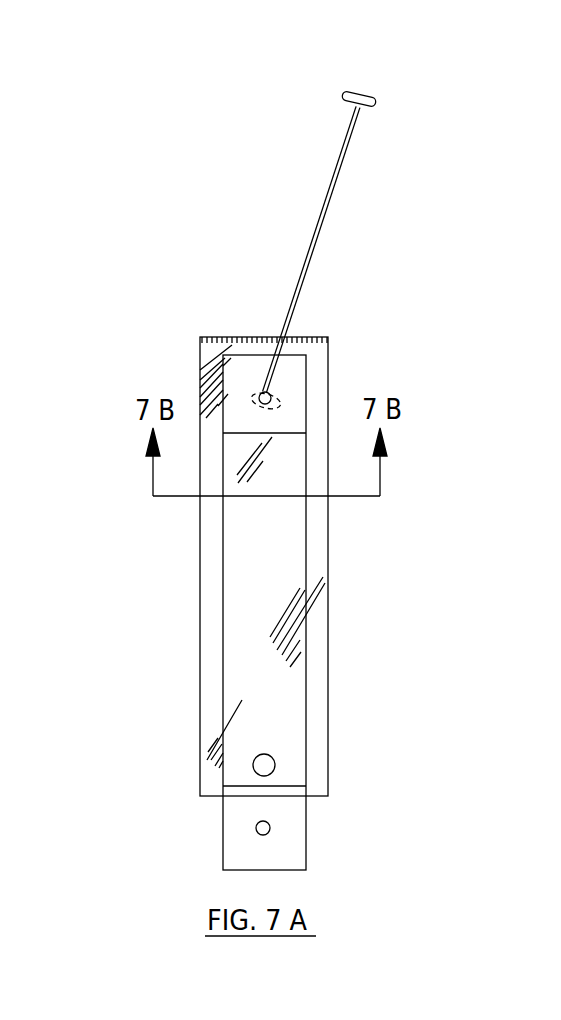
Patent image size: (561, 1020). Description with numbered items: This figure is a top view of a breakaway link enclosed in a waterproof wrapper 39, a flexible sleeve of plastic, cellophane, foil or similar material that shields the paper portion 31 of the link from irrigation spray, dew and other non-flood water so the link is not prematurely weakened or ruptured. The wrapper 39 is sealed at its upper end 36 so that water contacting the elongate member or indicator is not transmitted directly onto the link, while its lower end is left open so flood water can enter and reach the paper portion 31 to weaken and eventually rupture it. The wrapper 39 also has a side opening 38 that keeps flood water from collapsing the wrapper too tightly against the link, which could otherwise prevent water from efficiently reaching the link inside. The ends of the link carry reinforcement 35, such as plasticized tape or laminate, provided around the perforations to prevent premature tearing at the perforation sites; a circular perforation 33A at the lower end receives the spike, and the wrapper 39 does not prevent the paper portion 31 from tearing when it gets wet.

The paper portion 31 is at (284, 565).
The circular perforation 33A is at (256, 828).
The reinforcement 35 is at (293, 377).
The upper end 36 is at (253, 337).
The side opening 38 is at (263, 767).
The waterproof wrapper 39 is at (321, 688).